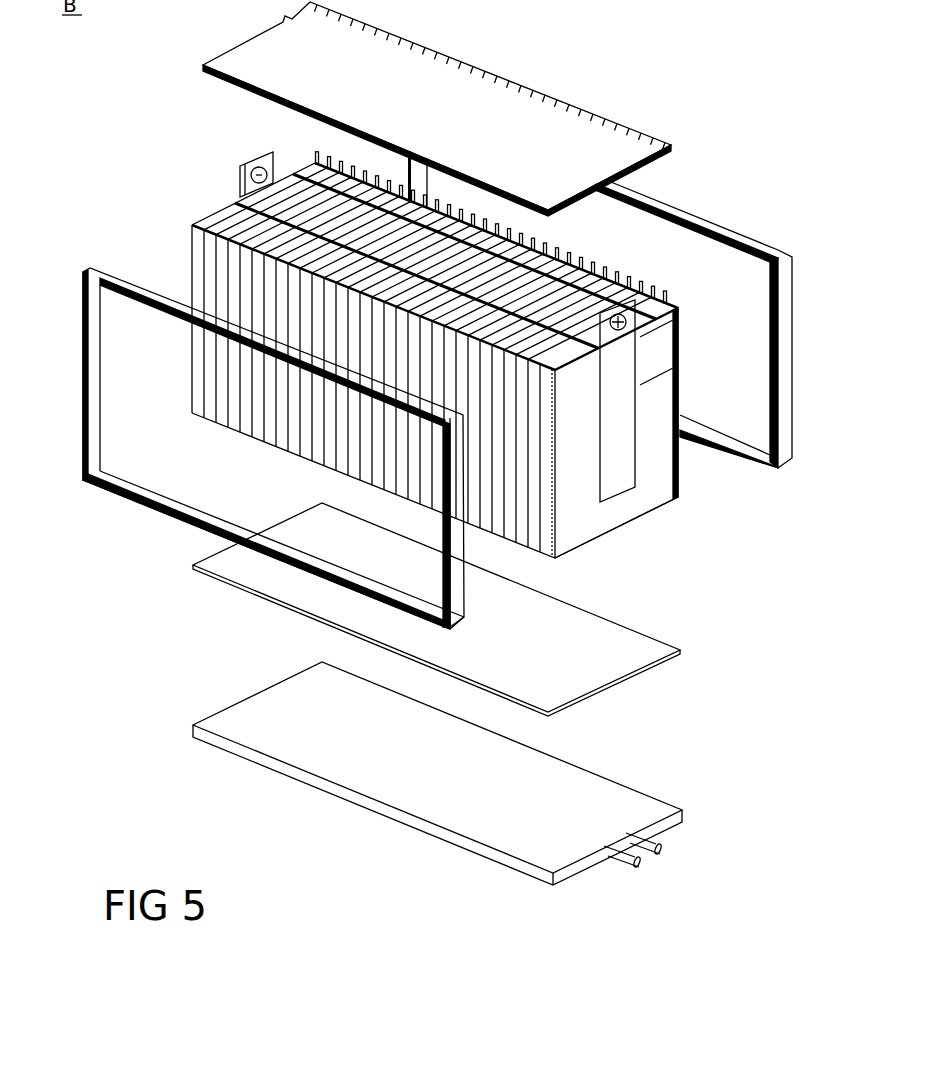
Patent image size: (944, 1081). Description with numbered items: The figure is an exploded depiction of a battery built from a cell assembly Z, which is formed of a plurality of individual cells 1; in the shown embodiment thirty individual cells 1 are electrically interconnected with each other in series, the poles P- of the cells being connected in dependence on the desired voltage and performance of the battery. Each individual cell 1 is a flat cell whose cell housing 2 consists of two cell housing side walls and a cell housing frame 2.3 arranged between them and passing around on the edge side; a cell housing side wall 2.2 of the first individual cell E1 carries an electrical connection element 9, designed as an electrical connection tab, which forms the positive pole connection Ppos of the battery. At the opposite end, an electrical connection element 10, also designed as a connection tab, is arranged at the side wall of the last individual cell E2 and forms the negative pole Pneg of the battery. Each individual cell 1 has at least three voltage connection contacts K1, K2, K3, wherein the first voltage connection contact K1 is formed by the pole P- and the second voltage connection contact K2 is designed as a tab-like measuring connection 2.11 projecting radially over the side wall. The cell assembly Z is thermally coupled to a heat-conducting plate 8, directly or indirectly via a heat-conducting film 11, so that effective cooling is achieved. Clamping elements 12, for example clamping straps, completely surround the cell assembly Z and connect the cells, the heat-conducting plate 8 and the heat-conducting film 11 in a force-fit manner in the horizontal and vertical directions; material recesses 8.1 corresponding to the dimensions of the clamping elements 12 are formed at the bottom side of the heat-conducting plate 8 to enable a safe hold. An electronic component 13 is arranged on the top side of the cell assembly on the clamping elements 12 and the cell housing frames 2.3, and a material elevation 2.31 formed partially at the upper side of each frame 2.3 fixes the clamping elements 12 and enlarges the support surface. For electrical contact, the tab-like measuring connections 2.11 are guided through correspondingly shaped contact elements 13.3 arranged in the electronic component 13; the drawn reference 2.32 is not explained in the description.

The individual cell 1 is at (600, 268).
The cell housing 2 is at (547, 522).
The measuring connection 2.11 is at (612, 298).
The cell housing side wall 2.2 is at (662, 478).
The cell housing frame 2.3 is at (200, 275).
The material elevation 2.31 is at (238, 214).
The cell bottom edge 2.32 is at (600, 517).
The heat-conducting plate 8 is at (450, 812).
The material recesses 8.1 is at (672, 822).
The electrical connection element 9 is at (620, 435).
The electrical connection element 10 is at (248, 178).
The heat-conducting film 11 is at (670, 650).
The clamping element 12 is at (222, 528).
The electronic component 13 is at (580, 123).
The contact elements 13.3 is at (428, 48).
The first individual cell E1 is at (547, 550).
The last individual cell E2 is at (195, 240).
The first voltage connection contact K1 is at (190, 372).
The second voltage connection contact K2 is at (672, 310).
The third voltage connection contact K3 is at (658, 375).
The negative pole P- is at (190, 332).
The negative pole connection Pneg is at (250, 170).
The positive pole connection Ppos is at (672, 298).
The cell assembly Z is at (318, 438).